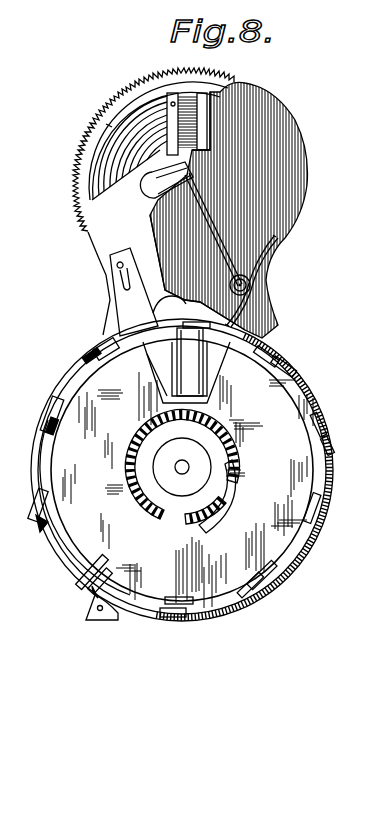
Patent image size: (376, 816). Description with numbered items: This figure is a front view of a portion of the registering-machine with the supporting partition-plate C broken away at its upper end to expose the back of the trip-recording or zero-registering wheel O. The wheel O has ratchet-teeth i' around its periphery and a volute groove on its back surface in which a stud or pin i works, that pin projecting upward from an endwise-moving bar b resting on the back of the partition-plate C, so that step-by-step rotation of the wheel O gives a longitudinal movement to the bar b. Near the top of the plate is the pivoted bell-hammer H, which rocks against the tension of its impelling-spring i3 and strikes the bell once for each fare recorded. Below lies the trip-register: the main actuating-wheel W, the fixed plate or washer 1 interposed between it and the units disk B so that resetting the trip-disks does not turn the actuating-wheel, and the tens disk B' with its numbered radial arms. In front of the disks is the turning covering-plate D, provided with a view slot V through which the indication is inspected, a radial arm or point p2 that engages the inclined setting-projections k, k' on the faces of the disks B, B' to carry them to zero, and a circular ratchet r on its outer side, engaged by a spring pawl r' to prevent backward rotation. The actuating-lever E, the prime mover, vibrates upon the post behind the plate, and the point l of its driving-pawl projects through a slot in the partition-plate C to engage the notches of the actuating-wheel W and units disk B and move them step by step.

The trip-recording wheel O is at (147, 149).
The ratchet teeth i' is at (98, 114).
The stud or pin i is at (172, 111).
The bar b is at (187, 124).
The partition-plate C is at (229, 210).
The bell-hammer H is at (194, 228).
The impelling-spring i3 is at (266, 309).
The fixed plate or washer 1 is at (134, 292).
The units disk B is at (184, 470).
The view slot V is at (157, 375).
The tens disk B' is at (242, 464).
The covering-plate D is at (188, 490).
The circular ratchet r is at (187, 467).
The pawl r' is at (220, 496).
The radial arm or point p2 is at (97, 348).
The stop k' is at (74, 357).
The setting-projections k is at (172, 470).
The point of driving-pawl l is at (318, 506).
The actuating-lever E is at (102, 611).
The main actuating-wheel W is at (176, 617).